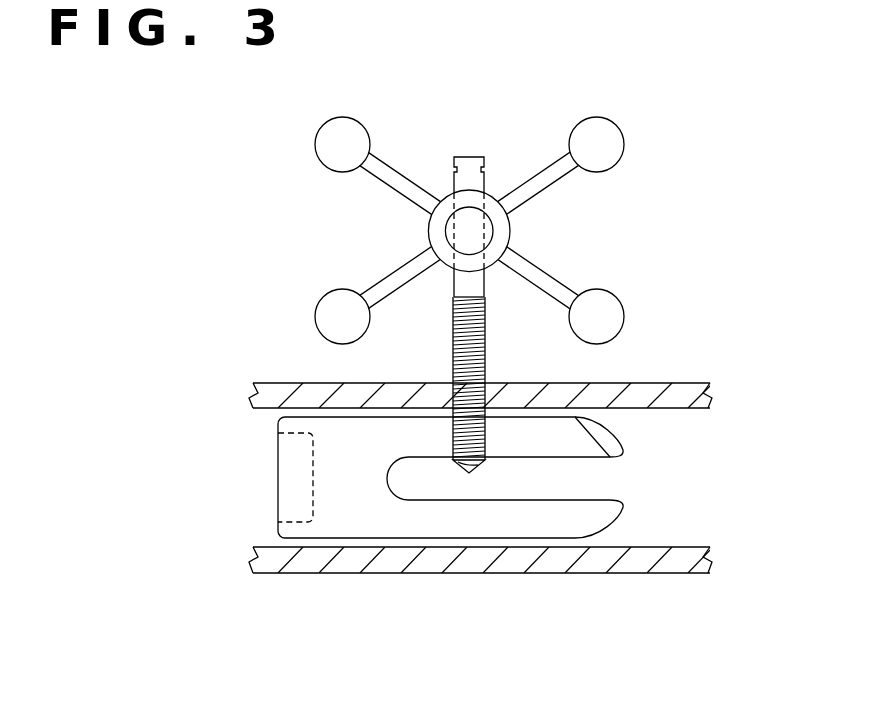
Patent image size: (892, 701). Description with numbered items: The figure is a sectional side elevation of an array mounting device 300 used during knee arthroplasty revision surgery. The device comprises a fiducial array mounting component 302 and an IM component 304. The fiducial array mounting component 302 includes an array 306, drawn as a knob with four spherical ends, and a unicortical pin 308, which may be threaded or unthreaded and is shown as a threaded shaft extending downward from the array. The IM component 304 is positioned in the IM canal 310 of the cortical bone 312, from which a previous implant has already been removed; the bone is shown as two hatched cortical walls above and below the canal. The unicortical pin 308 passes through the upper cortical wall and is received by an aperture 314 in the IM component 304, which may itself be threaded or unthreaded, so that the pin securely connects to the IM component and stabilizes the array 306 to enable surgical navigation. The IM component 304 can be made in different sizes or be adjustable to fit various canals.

The array mounting device 300 is at (215, 327).
The fiducial array mounting component 302 is at (590, 243).
The IM component 304 is at (340, 478).
The array 306 is at (317, 163).
The unicortical pin 308 is at (487, 358).
The IM canal 310 is at (657, 487).
The cortical bone 312 is at (627, 573).
The aperture 314 is at (452, 428).